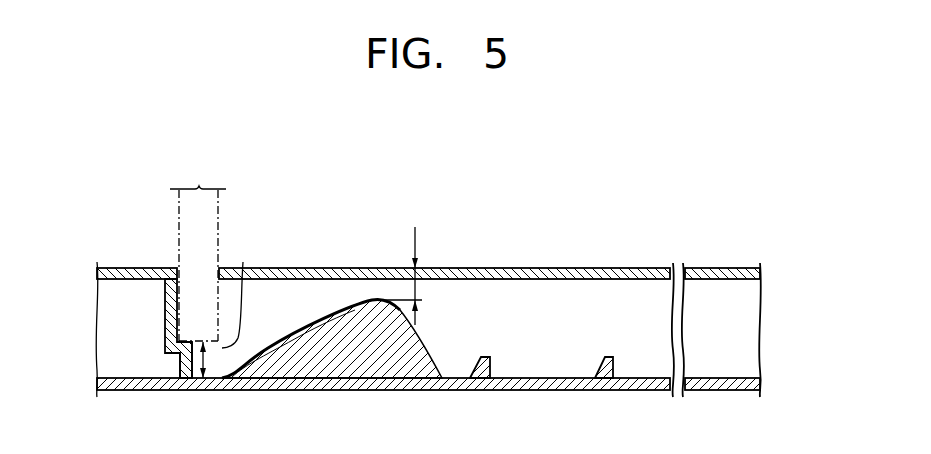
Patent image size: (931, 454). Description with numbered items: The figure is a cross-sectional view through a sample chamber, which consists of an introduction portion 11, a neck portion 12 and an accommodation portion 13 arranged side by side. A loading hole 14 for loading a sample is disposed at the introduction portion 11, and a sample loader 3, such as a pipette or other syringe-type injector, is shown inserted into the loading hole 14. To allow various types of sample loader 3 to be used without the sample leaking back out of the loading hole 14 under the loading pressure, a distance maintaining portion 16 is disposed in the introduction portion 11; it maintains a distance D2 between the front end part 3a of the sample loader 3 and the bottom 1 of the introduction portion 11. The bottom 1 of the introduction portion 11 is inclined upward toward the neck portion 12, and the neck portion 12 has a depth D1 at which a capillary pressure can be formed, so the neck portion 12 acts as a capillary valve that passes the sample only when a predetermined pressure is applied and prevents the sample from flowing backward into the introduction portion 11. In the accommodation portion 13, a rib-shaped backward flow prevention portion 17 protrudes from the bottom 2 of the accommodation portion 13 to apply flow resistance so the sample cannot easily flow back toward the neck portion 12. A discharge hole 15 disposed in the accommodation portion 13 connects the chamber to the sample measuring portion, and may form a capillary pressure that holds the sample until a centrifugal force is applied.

The bottom of the introduction portion 1 is at (266, 343).
The bottom of the accommodation portion 2 is at (379, 270).
The sample loader 3 is at (199, 188).
The front end part of the sample loader 3a is at (243, 262).
The introduction portion 11 is at (167, 400).
The neck portion 12 is at (463, 400).
The accommodation portion 13 is at (757, 400).
The loading hole 14 is at (180, 292).
The discharge hole 15 is at (758, 333).
The distance maintaining portion 16 is at (179, 352).
The backward flow prevention portion 17 is at (613, 357).
The depth of the neck portion D1 is at (411, 276).
The distance between the front end part and the bottom D2 is at (203, 355).